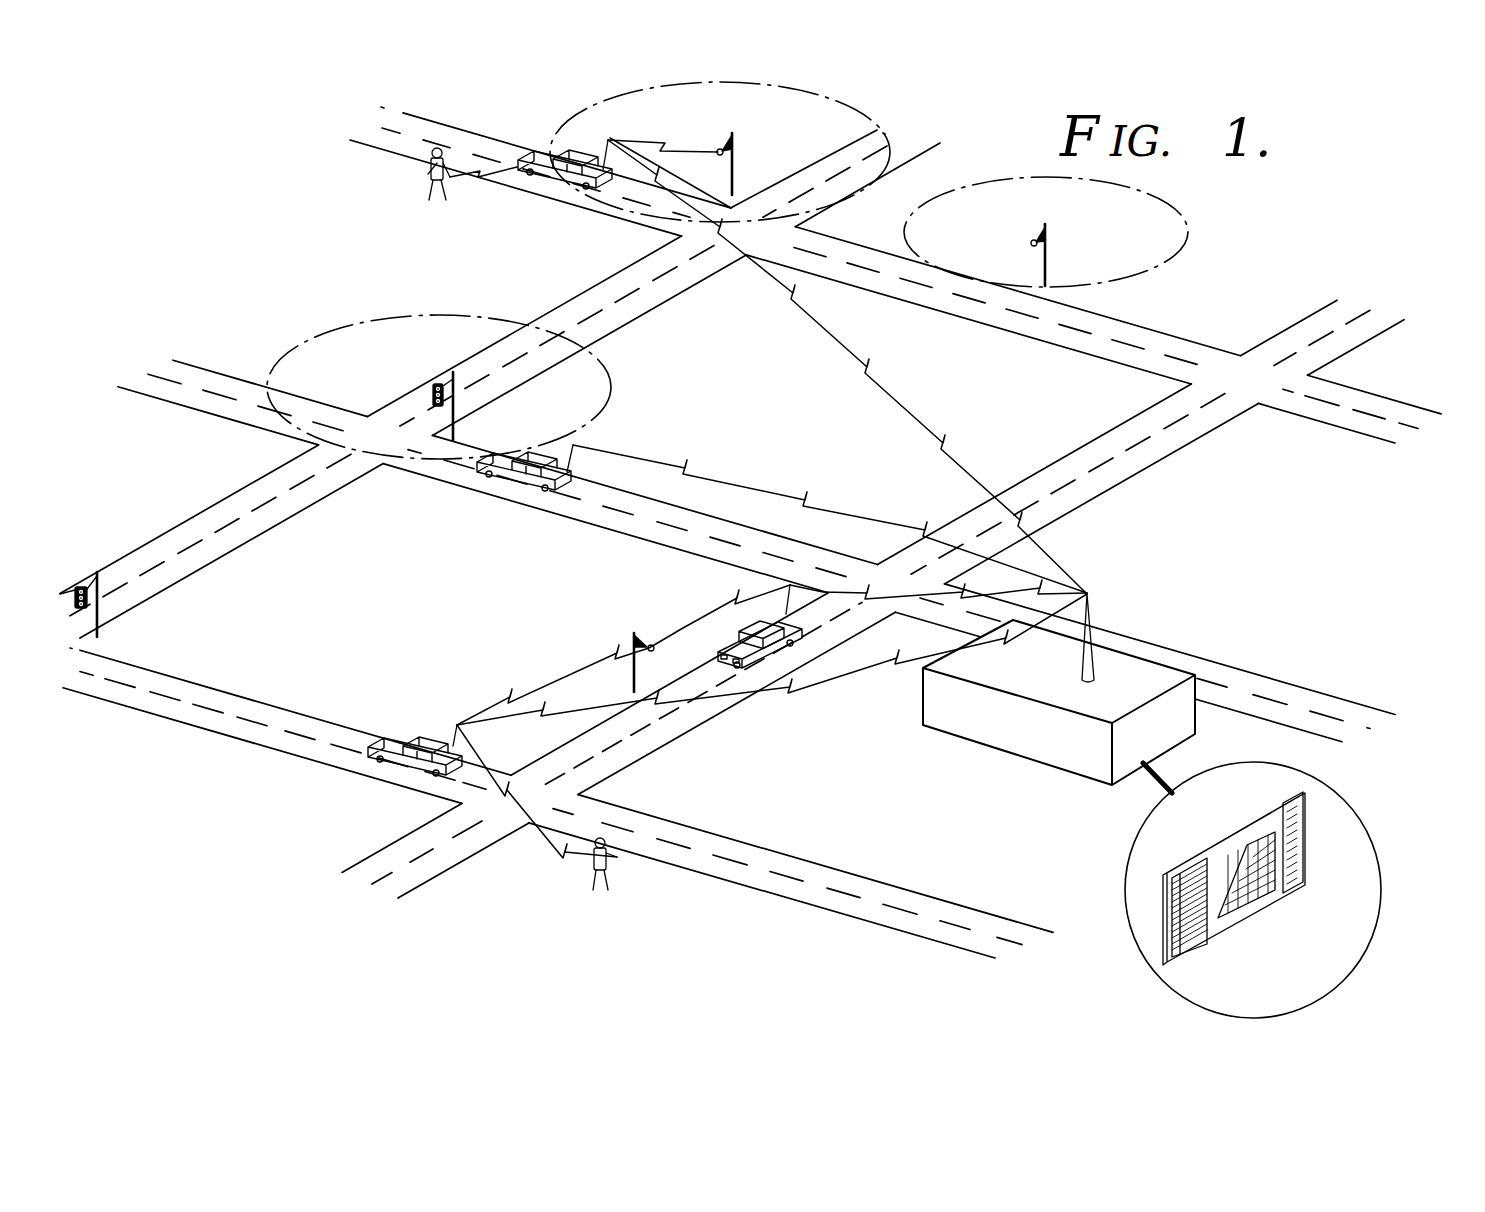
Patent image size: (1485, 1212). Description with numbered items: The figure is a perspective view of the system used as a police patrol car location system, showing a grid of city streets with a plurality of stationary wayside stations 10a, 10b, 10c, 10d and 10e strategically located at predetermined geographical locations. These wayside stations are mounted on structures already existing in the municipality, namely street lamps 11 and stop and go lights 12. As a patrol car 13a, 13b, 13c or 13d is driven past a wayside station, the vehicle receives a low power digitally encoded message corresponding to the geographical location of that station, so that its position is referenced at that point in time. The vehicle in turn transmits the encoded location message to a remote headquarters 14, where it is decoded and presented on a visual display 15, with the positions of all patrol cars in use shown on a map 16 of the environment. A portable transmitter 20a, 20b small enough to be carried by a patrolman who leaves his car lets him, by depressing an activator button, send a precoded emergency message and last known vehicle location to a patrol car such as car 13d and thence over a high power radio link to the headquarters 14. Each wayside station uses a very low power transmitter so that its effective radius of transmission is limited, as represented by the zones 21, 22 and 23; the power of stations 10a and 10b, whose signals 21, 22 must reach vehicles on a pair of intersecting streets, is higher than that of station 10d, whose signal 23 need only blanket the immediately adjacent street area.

The stationary wayside station 10a is at (718, 148).
The stationary wayside station 10b is at (433, 387).
The stationary wayside station 10c is at (654, 642).
The stationary wayside station 10d is at (1033, 240).
The stationary wayside station 10e is at (84, 586).
The street lamp 11 is at (734, 172).
The stop and go light 12 is at (455, 425).
The patrol car 13a is at (548, 145).
The patrol car 13b is at (497, 486).
The patrol car 13c is at (724, 645).
The patrol car 13d is at (417, 730).
The remote headquarters 14 is at (978, 735).
The visual display 15 is at (1211, 843).
The map 16 is at (1253, 892).
The portable transmitter 20a is at (448, 195).
The portable transmitter 20b is at (592, 872).
The effective radius of transmission 21 is at (360, 310).
The effective radius of transmission 22 is at (872, 108).
The effective radius of transmission 23 is at (1184, 208).